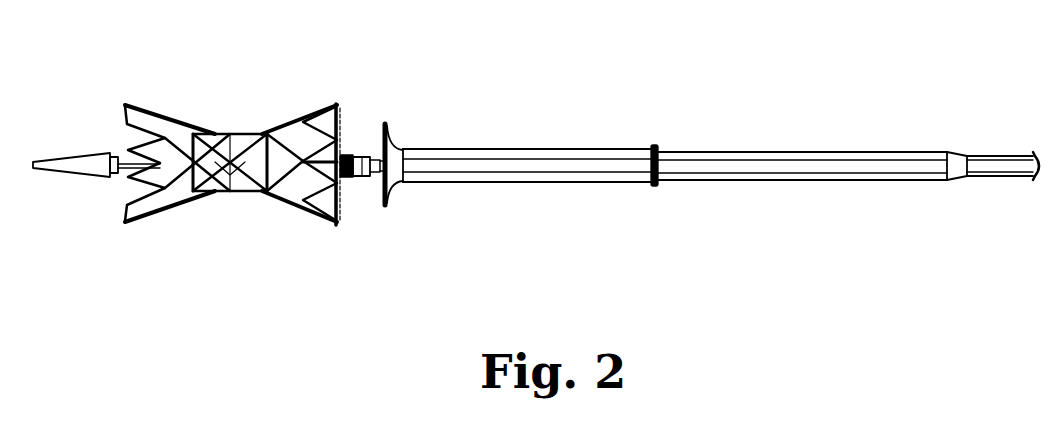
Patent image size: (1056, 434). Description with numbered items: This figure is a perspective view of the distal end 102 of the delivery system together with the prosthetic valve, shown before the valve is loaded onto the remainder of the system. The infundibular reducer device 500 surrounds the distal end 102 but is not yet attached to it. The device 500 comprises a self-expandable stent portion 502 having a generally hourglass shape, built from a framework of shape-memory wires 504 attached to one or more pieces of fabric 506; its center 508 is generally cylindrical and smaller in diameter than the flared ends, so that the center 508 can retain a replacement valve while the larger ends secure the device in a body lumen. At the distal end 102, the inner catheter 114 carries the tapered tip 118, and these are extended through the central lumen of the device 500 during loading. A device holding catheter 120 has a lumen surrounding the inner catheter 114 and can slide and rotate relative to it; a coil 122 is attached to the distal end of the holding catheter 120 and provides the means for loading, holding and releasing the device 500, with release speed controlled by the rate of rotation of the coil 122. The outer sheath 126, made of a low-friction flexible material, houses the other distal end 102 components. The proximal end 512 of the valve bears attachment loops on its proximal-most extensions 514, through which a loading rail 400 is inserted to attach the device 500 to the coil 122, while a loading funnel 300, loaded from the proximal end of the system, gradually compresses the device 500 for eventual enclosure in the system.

The distal end 102 is at (86, 92).
The infundibular reducer device 500 is at (240, 80).
The fabric 506 is at (200, 146).
The self-expandable stent portion 502 is at (237, 126).
The loading rail 400 is at (350, 138).
The proximal end 512 is at (362, 130).
The loading funnel 300 is at (493, 153).
The device holding catheter 120 is at (743, 162).
The outer sheath 126 is at (863, 158).
The tapered tip 118 is at (88, 163).
The inner catheter 114 is at (125, 170).
The wires 504 is at (243, 191).
The center 508 is at (193, 259).
The proximal-most extensions 514 is at (351, 179).
The coil 122 is at (355, 180).